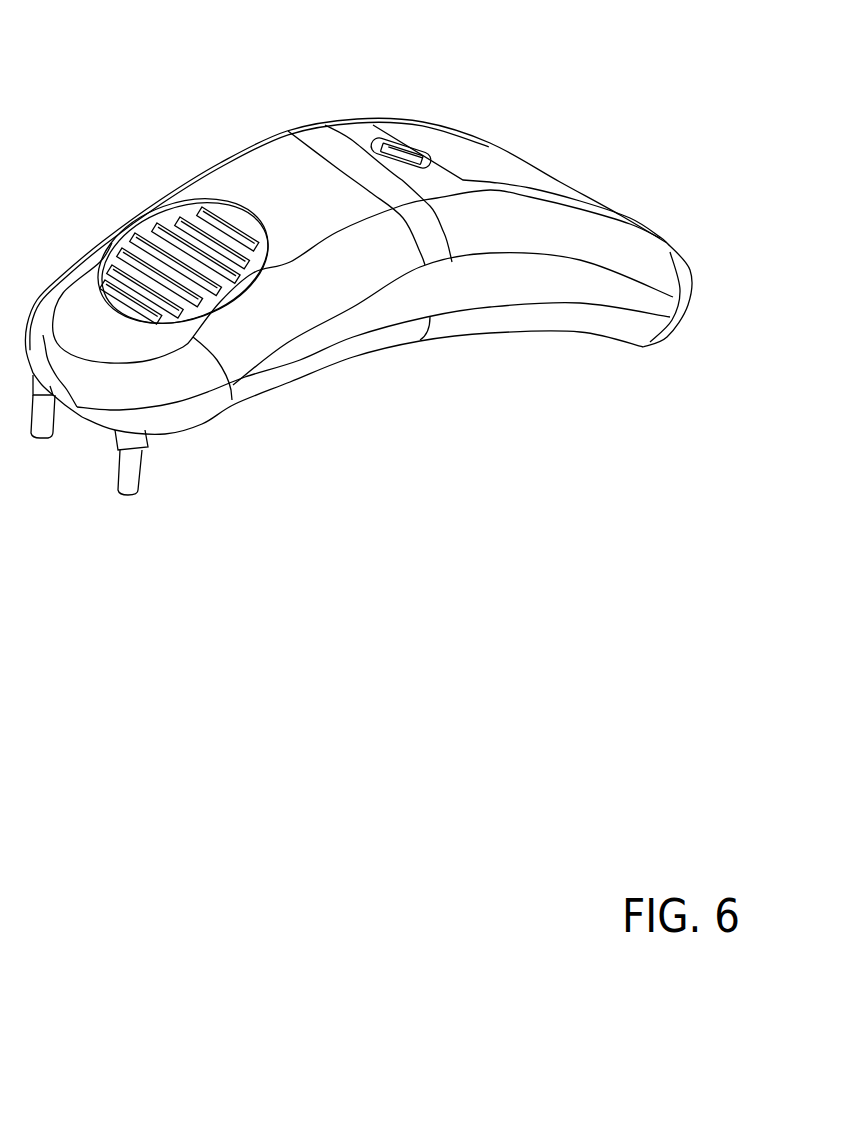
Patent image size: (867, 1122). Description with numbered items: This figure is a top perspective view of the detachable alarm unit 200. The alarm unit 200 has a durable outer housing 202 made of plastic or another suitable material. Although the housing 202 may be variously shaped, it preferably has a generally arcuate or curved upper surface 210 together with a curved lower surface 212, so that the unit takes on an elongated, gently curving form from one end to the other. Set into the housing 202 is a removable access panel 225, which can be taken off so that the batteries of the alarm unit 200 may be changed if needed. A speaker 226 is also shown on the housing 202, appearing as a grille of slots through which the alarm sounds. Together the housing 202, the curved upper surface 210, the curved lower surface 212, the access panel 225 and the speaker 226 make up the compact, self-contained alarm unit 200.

The detachable alarm unit 200 is at (397, 348).
The outer housing 202 is at (617, 253).
The curved upper surface 210 is at (248, 170).
The curved lower surface 212 is at (333, 366).
The removable access panel 225 is at (457, 160).
The speaker 226 is at (177, 213).